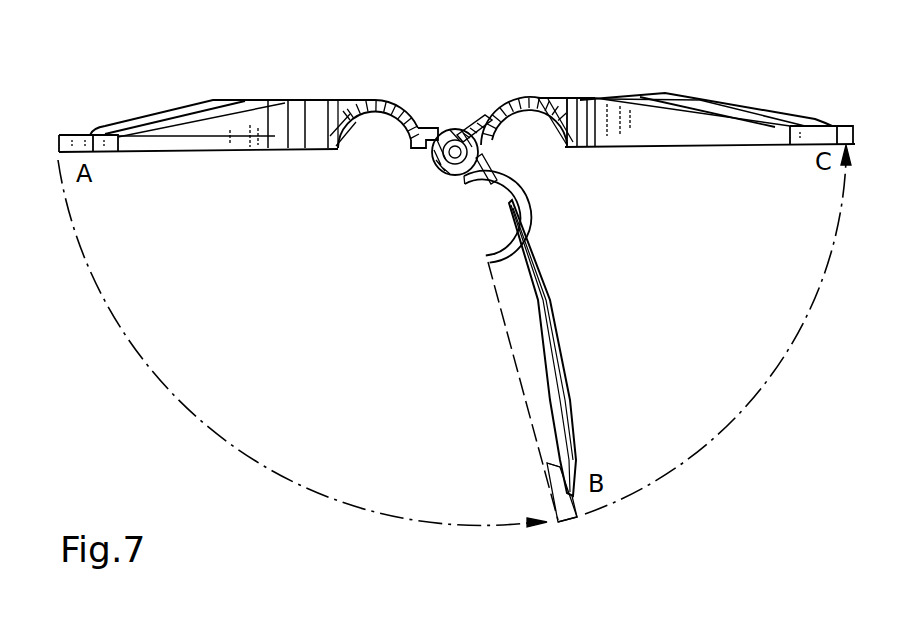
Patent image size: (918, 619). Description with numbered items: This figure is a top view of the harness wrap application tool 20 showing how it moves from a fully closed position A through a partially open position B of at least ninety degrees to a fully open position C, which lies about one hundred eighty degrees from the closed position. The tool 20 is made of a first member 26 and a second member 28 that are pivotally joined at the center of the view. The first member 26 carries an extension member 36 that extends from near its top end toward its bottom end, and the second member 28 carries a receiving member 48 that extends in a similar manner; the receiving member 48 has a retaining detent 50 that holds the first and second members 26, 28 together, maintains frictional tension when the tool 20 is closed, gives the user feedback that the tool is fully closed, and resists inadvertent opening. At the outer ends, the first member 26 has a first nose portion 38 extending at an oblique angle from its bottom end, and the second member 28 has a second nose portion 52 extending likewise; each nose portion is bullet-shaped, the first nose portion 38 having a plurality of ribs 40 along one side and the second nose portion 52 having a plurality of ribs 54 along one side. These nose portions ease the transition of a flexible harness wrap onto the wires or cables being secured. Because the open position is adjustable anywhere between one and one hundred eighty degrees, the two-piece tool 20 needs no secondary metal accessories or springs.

The tool 20 is at (436, 92).
The first member 26 is at (650, 136).
The second member 28 is at (313, 117).
The extension member 36 is at (457, 130).
The first nose portion 38 is at (838, 126).
The ribs 40 is at (687, 92).
The receiving member 48 is at (450, 160).
The retaining detent 50 is at (460, 127).
The second nose portion 52 is at (73, 137).
The ribs 54 is at (173, 107).